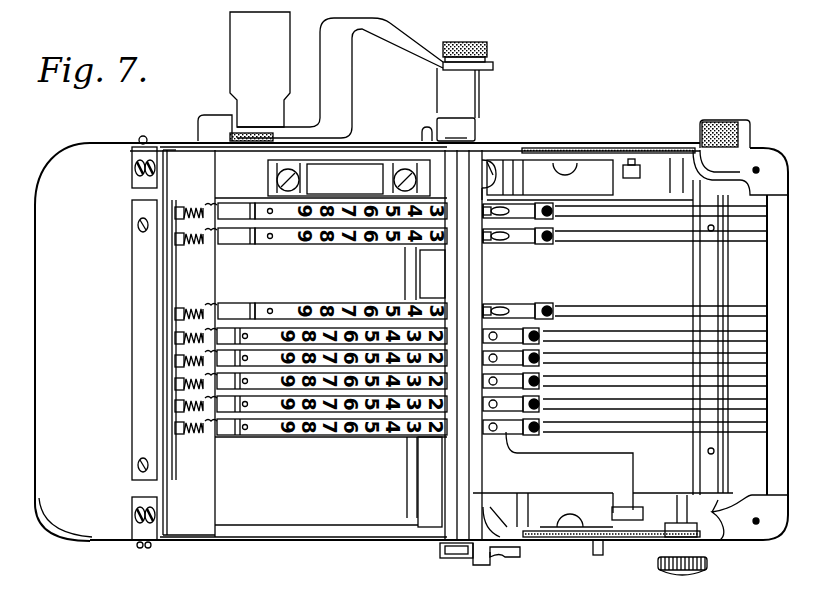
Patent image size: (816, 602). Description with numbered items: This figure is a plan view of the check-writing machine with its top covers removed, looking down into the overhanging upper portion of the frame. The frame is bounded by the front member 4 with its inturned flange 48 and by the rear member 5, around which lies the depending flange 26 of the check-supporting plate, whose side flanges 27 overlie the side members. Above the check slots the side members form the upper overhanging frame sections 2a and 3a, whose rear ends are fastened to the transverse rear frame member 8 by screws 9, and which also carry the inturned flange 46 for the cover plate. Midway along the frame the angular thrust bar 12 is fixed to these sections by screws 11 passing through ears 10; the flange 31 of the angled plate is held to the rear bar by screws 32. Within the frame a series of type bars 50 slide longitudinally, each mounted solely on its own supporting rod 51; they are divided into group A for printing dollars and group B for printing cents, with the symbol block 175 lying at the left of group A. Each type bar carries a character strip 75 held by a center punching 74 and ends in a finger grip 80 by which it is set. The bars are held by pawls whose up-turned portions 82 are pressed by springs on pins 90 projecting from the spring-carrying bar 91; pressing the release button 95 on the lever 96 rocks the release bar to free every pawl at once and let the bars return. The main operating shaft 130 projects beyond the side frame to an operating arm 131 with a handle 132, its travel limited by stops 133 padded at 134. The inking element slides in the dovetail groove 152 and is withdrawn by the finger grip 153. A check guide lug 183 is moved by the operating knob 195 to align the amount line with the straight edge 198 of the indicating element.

The upper overhanging frame section 2a is at (178, 143).
The upper overhanging frame section 3a is at (188, 540).
The front member 4 is at (789, 307).
The rear member 5 is at (42, 522).
The rear frame member 8 is at (170, 283).
The screws 9 is at (99, 151).
The ears 10 is at (498, 165).
The screws 11 is at (488, 160).
The thrust bar 12 is at (463, 345).
The depending flange 26 is at (45, 338).
The depending flanges 27 is at (540, 149).
The flange 31 is at (153, 347).
The screws 32 is at (139, 228).
The inturned flange 46 is at (728, 177).
The inturned flange 48 is at (767, 274).
The type bars 50 is at (277, 247).
The supporting rod 51 is at (648, 213).
The center punching 74 is at (267, 208).
The character strip 75 is at (360, 311).
The finger grip 80 is at (540, 352).
The up-turned portion of pawl 82 is at (177, 242).
The pins 90 is at (212, 325).
The spring-carrying bar 91 is at (215, 280).
The release button 95 is at (380, 160).
The lever 96 is at (360, 160).
The main operating shaft 130 is at (481, 85).
The operating arm 131 is at (346, 28).
The handle 132 is at (240, 32).
The stops 133 is at (215, 115).
The padding 134 is at (273, 137).
The dovetail groove 152 is at (427, 127).
The finger grip 153 is at (456, 129).
The symbol block 175 is at (455, 559).
The lug 183 is at (600, 556).
The operating knob 195 is at (706, 568).
The straight edge 198 is at (486, 566).
The group A is at (566, 445).
The group B is at (577, 200).